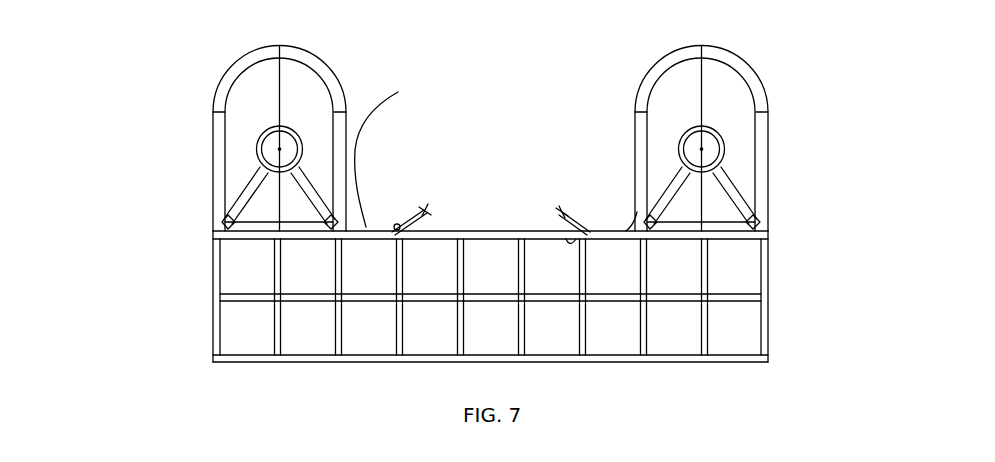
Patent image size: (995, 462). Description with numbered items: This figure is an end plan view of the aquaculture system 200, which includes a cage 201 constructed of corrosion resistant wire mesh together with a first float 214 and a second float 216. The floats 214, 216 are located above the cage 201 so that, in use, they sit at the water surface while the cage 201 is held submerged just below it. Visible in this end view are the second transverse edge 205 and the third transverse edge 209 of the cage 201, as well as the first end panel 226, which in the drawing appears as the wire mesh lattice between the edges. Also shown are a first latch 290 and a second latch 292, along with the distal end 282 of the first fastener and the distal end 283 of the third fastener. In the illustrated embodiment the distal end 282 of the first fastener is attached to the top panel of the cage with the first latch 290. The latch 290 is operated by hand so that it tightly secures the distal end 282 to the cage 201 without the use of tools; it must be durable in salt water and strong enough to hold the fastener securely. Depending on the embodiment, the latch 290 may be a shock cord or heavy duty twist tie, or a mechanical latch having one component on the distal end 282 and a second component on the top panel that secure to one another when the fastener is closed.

The aquaculture system 200 is at (168, 290).
The cage 201 is at (272, 355).
The second transverse edge 205 is at (553, 148).
The third transverse edge 209 is at (563, 363).
The first float 214 is at (742, 52).
The second float 216 is at (340, 57).
The first end panel 226 is at (720, 299).
The distal end of the first fastener 282 is at (617, 226).
The distal end of the third fastener 283 is at (405, 147).
The first latch 290 is at (568, 212).
The second latch 292 is at (398, 211).